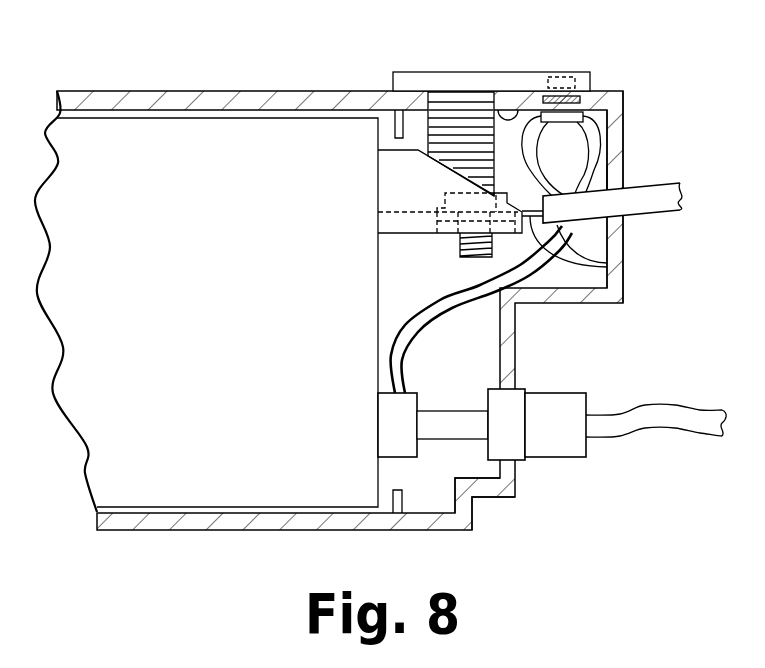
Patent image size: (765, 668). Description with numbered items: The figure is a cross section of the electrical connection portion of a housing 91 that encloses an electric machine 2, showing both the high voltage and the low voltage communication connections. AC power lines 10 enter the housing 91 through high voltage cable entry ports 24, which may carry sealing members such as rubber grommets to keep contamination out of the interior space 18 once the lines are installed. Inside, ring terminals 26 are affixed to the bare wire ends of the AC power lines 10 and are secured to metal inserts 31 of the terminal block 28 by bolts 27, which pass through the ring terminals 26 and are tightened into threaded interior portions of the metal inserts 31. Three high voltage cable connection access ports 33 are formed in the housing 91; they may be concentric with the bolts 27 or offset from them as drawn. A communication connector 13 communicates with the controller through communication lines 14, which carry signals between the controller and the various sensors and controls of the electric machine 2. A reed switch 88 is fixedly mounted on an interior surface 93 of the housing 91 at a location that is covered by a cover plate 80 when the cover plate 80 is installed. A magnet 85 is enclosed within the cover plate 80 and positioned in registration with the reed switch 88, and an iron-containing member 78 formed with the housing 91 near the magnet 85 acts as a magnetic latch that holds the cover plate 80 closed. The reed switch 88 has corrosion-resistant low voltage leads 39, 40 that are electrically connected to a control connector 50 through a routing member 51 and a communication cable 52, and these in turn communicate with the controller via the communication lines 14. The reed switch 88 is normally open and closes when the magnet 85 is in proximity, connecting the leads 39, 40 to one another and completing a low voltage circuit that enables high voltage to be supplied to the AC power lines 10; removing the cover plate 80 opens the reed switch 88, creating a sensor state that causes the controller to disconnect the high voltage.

The electric machine 2 is at (162, 475).
The AC power lines 10 is at (675, 215).
The communication connector 13 is at (568, 403).
The communication lines 14 is at (670, 418).
The interior space 18 is at (435, 492).
The cable entry ports 24 is at (620, 233).
The ring terminals 26 is at (578, 268).
The bolts 27 is at (468, 250).
The terminal block 28 is at (393, 183).
The metal inserts 31 is at (435, 220).
The high voltage cable connection access ports 33 is at (427, 127).
The low voltage lead 39 is at (612, 178).
The low voltage lead 40 is at (533, 142).
The control connector 50 is at (513, 440).
The routing member 51 is at (388, 420).
The communication cable 52 is at (455, 430).
The iron-containing member 78 is at (580, 101).
The cover plate 80 is at (530, 72).
The magnet 85 is at (590, 80).
The reed switch 88 is at (598, 140).
The housing 91 is at (220, 525).
The interior surface 93 is at (512, 88).